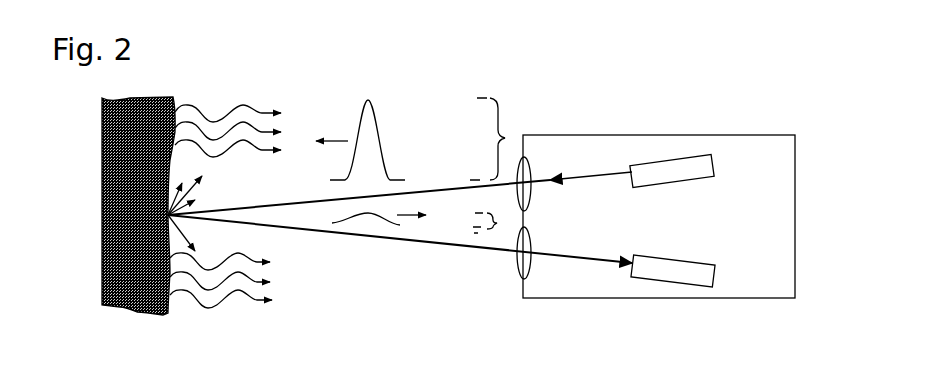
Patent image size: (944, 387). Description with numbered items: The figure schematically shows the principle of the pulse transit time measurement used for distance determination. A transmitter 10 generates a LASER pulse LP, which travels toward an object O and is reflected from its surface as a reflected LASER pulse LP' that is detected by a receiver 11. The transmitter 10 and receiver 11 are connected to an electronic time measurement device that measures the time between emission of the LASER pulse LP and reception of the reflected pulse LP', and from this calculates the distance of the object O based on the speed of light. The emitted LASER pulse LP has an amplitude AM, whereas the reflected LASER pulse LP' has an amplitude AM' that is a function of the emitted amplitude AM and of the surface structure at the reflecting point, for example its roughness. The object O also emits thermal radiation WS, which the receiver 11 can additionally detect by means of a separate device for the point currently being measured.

The transmitter 10 is at (682, 173).
The receiver 11 is at (700, 278).
The object O is at (140, 297).
The thermal radiation WS is at (271, 103).
The LASER pulse LP is at (385, 140).
The reflected LASER pulse LP' is at (379, 257).
The amplitude of the emitted LASER pulse AM is at (521, 136).
The amplitude of the reflected LASER pulse AM' is at (494, 262).